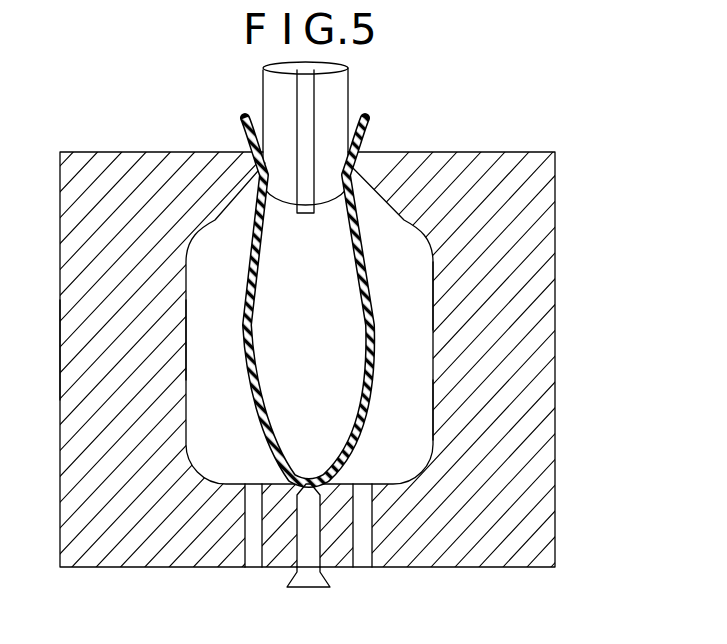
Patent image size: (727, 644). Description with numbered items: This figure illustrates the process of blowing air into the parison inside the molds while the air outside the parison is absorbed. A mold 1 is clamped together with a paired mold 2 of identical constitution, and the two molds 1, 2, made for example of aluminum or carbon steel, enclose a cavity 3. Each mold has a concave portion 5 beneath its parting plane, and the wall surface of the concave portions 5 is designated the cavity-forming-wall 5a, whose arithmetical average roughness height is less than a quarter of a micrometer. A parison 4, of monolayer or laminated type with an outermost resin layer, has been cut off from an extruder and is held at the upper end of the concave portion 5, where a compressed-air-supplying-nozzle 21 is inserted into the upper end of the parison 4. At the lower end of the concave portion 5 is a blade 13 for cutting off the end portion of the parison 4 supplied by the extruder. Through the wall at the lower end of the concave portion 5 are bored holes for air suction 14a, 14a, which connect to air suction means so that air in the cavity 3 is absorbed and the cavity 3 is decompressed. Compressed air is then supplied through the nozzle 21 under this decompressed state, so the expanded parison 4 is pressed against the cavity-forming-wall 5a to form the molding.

The mold 1 is at (483, 178).
The mold 2 is at (105, 180).
The cavity 3 is at (412, 299).
The parison 4 is at (245, 307).
The concave portion 5 is at (219, 242).
The cavity-forming-wall 5a is at (186, 338).
The blade 13 is at (295, 497).
The holes for air suction 14a is at (253, 552).
The compressed-air-supplying-nozzle 21 is at (333, 100).